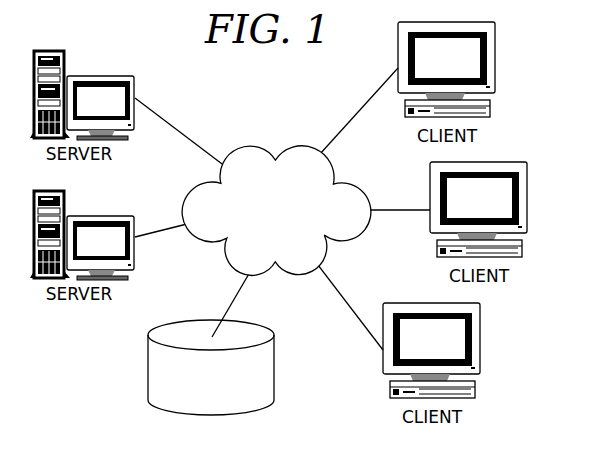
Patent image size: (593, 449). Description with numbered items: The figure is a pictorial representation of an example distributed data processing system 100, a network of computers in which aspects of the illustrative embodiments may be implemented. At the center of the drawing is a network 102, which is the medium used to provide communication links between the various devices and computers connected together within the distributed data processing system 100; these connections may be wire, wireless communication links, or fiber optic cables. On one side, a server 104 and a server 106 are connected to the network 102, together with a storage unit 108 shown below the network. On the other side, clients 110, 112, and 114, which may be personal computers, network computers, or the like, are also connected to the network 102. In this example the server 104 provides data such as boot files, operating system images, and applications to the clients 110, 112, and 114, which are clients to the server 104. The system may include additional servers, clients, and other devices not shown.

The distributed data processing system 100 is at (107, 349).
The network 102 is at (246, 146).
The server 104 is at (99, 74).
The server 106 is at (99, 214).
The storage unit 108 is at (274, 355).
The client 110 is at (496, 60).
The client 112 is at (526, 203).
The client 114 is at (479, 341).